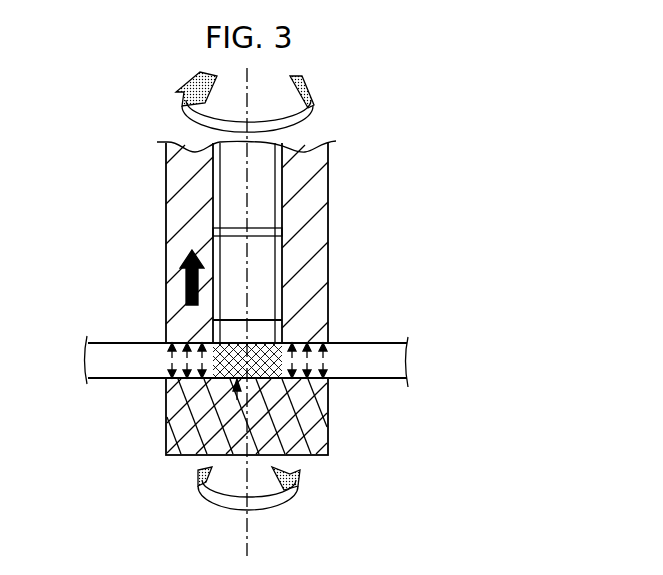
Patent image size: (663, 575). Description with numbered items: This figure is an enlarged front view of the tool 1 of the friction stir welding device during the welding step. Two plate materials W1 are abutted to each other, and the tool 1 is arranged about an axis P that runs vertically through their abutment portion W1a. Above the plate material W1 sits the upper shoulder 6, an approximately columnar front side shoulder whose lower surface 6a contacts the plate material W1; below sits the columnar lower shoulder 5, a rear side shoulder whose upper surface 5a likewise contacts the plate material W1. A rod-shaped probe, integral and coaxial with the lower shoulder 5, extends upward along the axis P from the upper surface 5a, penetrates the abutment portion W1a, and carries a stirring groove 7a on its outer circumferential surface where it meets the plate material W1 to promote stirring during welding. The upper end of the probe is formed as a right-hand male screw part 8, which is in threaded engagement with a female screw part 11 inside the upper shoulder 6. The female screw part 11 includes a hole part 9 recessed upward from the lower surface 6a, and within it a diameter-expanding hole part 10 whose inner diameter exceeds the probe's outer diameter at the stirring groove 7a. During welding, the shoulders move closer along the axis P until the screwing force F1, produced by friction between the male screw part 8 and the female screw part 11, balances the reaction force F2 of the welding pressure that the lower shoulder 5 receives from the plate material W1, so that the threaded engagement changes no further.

The tool 1 is at (402, 207).
The lower shoulder 5 is at (300, 372).
The upper surface 5a is at (296, 378).
The upper shoulder 6 is at (310, 198).
The lower surface 6a is at (290, 342).
The stirring groove 7a is at (218, 382).
The male screw part 8 is at (280, 267).
The hole part 9 is at (213, 196).
The diameter-expanding hole part 10 is at (285, 385).
The female screw part 11 is at (218, 166).
The screwing force F1 is at (182, 286).
The reaction force F2 is at (170, 352).
The plate material W1 is at (408, 362).
The abutment portion W1a is at (237, 400).
The axis P is at (250, 538).